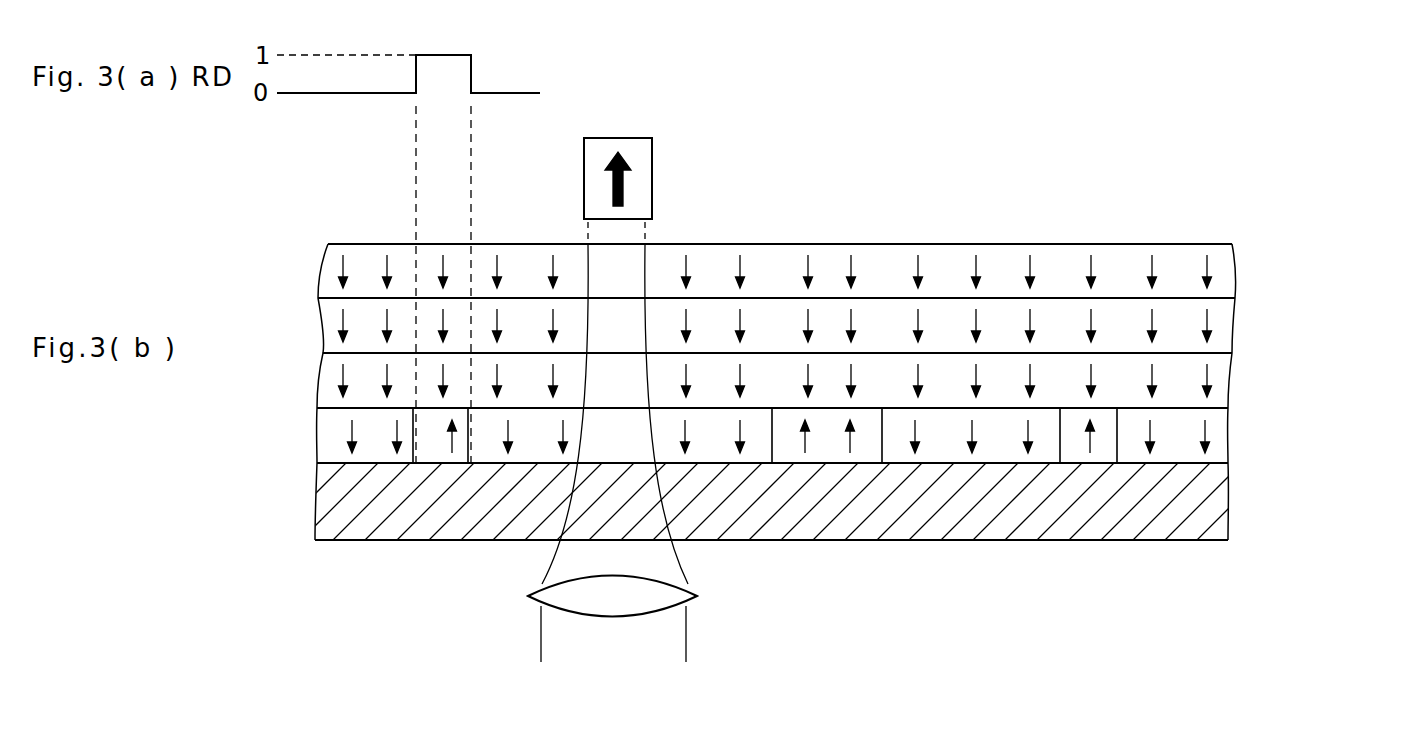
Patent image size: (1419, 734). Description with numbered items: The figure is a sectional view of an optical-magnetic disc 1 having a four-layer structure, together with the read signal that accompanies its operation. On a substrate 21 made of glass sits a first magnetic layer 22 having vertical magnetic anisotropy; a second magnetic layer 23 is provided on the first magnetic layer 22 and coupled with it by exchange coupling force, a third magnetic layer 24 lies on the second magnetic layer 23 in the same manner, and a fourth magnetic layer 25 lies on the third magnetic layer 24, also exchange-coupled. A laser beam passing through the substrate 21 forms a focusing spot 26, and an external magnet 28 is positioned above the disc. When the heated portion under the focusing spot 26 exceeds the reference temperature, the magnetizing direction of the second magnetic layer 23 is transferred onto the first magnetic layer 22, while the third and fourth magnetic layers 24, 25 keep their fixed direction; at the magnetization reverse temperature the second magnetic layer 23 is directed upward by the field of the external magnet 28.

The magneto-optical recording medium 1 is at (1337, 418).
The substrate 21 is at (1215, 519).
The first magnetic layer 22 is at (1225, 438).
The second magnetic layer 23 is at (1220, 381).
The third magnetic layer 24 is at (1220, 326).
The fourth magnetic layer 25 is at (1222, 273).
The focusing spot 26 is at (660, 508).
The external magnet 28 is at (652, 157).